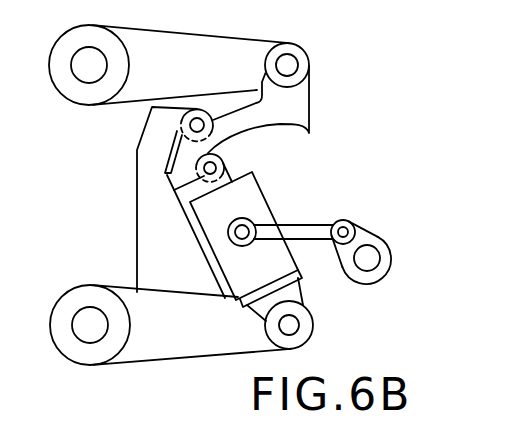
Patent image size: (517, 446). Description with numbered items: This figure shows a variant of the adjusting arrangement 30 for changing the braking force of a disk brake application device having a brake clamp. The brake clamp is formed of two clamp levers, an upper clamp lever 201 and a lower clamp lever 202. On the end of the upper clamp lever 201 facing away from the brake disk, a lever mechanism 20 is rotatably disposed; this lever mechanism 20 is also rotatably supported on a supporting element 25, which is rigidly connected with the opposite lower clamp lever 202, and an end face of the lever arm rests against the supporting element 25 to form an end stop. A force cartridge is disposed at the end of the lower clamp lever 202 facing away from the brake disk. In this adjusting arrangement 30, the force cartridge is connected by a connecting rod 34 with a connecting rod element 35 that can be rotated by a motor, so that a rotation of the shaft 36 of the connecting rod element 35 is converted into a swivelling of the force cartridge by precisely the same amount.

The lever mechanism 20 is at (311, 105).
The upper clamp lever 201 is at (173, 31).
The lower clamp lever 202 is at (154, 361).
The supporting element 25 is at (186, 266).
The adjusting arrangement 30 is at (393, 242).
The connecting rod 34 is at (284, 224).
The connecting rod element 35 is at (355, 222).
The shaft 36 is at (375, 267).